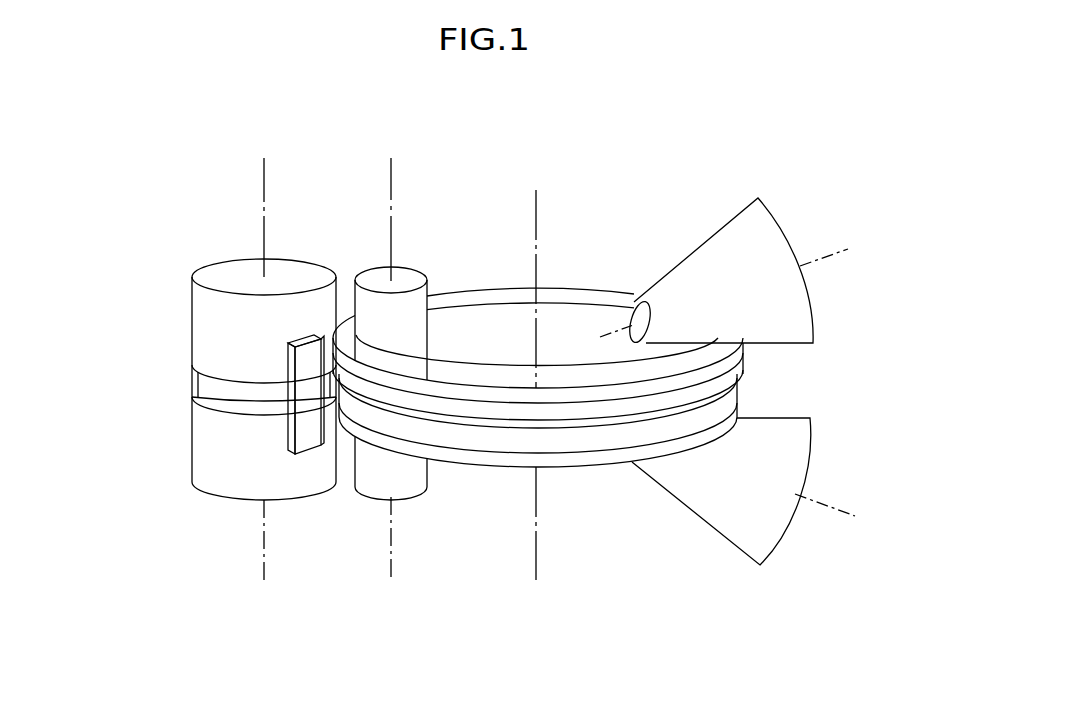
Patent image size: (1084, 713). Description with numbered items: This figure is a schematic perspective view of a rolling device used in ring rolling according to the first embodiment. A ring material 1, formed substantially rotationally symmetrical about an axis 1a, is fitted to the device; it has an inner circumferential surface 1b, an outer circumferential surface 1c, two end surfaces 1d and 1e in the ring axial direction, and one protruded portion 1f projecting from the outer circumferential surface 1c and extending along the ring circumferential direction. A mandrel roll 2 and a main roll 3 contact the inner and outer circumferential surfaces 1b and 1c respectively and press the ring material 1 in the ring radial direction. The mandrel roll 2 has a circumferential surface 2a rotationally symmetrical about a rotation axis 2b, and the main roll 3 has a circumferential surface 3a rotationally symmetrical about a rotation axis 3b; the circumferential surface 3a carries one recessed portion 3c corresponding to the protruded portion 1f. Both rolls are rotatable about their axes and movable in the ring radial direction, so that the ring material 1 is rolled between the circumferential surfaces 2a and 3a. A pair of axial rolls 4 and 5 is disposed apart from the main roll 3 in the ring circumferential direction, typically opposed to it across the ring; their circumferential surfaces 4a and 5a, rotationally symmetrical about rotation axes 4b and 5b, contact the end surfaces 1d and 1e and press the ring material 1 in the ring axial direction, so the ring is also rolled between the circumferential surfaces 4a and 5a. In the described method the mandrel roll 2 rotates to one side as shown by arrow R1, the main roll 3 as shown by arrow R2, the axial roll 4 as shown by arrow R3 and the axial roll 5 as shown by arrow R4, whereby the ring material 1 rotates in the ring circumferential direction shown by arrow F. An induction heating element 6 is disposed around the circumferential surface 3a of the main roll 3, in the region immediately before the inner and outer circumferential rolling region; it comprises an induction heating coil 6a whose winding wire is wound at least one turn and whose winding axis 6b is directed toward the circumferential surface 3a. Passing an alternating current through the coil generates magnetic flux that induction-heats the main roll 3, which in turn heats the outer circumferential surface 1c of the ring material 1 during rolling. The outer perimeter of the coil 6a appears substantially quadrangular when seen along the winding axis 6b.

The ring material 1 is at (538, 362).
The axis 1a is at (533, 225).
The inner circumferential surface 1b is at (580, 332).
The outer circumferential surface 1c is at (470, 457).
The end surface 1d is at (617, 302).
The end surface 1e is at (560, 470).
The protruded portion 1f is at (503, 442).
The mandrel roll 2 is at (402, 351).
The circumferential surface 2a is at (407, 308).
The rotation axis 2b is at (387, 190).
The main roll 3 is at (219, 357).
The circumferential surface 3a is at (208, 453).
The rotation axis 3b is at (263, 220).
The recessed portion 3c is at (200, 387).
The axial roll 4 is at (748, 244).
The circumferential surface 4a is at (733, 248).
The rotation axis 4b is at (843, 250).
The axial roll 5 is at (750, 536).
The circumferential surface 5a is at (715, 507).
The rotation axis 5b is at (855, 516).
The induction heating element 6 is at (282, 449).
The induction heating coil 6a is at (307, 454).
The winding axis 6b is at (306, 398).
The arrow R1 is at (405, 350).
The arrow R2 is at (214, 354).
The arrow R3 is at (778, 316).
The arrow R4 is at (762, 408).
The arrow F is at (589, 490).